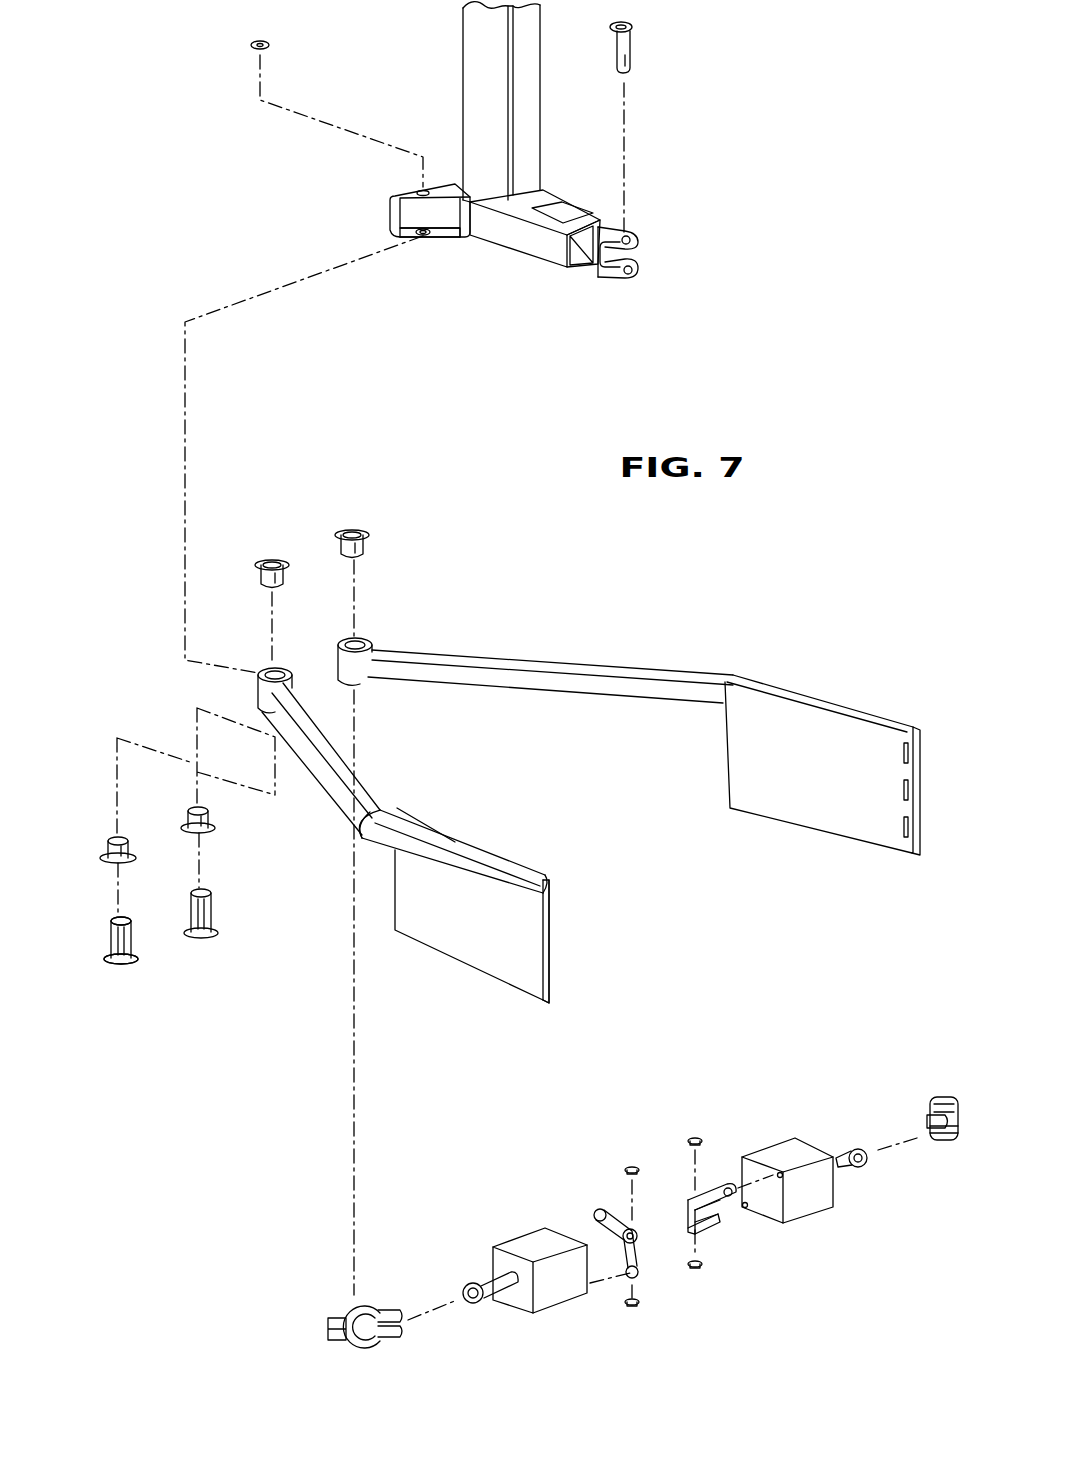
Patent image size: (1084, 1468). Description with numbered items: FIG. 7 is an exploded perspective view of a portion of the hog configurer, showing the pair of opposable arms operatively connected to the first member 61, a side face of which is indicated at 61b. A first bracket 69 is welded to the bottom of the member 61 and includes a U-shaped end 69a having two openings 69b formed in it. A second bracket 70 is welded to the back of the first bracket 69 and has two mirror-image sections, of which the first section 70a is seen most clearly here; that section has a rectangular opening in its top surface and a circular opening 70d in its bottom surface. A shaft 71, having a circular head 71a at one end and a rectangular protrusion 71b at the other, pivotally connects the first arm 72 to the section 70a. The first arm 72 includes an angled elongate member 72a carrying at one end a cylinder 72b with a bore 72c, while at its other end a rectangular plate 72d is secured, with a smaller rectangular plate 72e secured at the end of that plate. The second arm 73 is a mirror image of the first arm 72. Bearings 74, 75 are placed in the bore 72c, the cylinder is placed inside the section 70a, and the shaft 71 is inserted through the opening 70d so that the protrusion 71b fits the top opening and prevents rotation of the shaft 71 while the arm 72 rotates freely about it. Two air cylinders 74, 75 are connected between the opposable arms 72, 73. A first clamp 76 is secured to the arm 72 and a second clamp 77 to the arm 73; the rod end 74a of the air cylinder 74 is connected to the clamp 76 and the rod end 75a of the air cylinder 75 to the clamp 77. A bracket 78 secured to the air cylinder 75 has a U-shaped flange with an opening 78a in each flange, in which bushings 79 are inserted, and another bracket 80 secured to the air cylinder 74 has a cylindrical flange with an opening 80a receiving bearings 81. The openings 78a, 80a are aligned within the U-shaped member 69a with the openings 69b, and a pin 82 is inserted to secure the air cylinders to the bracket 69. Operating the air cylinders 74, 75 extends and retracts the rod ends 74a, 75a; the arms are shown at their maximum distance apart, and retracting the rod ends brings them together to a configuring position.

The first member 61 is at (475, 22).
The column side face 61b is at (480, 142).
The pin 82 is at (632, 50).
The second bracket 70 is at (390, 213).
The first section 70a is at (445, 240).
The circular opening 70d is at (427, 191).
The first bracket 69 is at (540, 240).
The U-shaped end 69a is at (602, 270).
The openings 69b is at (630, 230).
The air cylinder 75 is at (282, 545).
The second arm 73 is at (567, 653).
The bore 72c is at (268, 668).
The cylinder 72b is at (290, 672).
The first arm 72 is at (373, 800).
The angled elongate member 72a is at (363, 840).
The rectangular plate 72d is at (452, 948).
The smaller rectangular plate 72e is at (553, 927).
The air cylinder 74 is at (110, 838).
The shaft 71 is at (147, 980).
The circular head 71a is at (120, 963).
The rectangular protrusion 71b is at (120, 922).
The second clamp 77 is at (943, 1100).
The bushings 79 is at (693, 1137).
The bracket 78 is at (710, 1190).
The opening 78a is at (693, 1200).
The rod end 75a is at (847, 1155).
The bearings 81 is at (630, 1165).
The bracket 80 is at (600, 1213).
The opening 80a is at (637, 1232).
The rod end 74a is at (493, 1277).
The first clamp 76 is at (363, 1303).